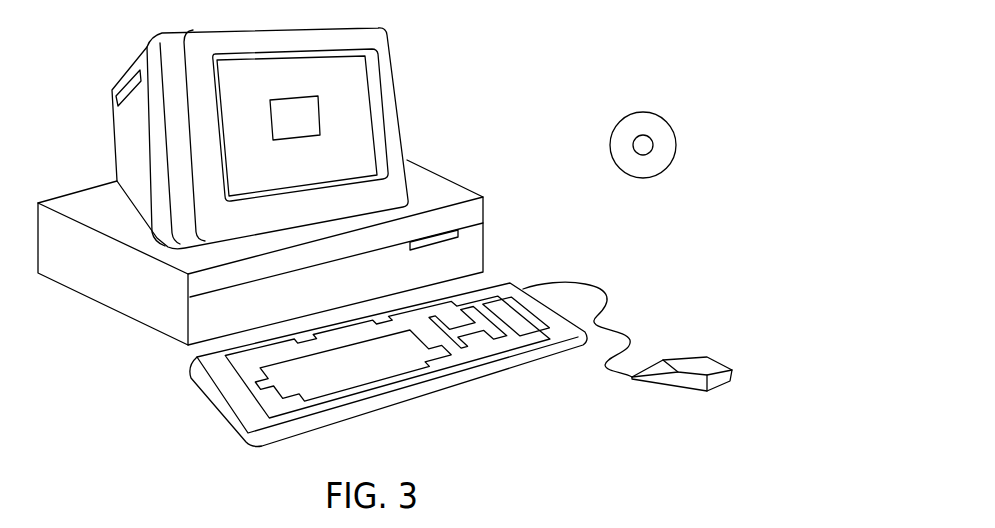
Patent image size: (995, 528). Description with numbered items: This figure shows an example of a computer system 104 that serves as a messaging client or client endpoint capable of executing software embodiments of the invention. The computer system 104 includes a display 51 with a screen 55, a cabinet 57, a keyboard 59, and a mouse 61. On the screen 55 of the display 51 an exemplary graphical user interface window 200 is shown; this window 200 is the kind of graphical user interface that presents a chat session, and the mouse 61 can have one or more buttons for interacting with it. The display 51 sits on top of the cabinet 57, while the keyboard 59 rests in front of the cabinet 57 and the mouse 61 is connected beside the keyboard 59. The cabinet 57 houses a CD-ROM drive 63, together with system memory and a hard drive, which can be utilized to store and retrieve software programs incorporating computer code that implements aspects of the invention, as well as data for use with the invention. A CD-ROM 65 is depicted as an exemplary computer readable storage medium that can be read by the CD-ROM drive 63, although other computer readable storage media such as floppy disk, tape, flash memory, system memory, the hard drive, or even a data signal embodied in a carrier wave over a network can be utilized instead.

The computer system 104 is at (606, 26).
The display 51 is at (402, 120).
The screen 55 is at (348, 80).
The graphical user interface window 200 is at (285, 128).
The cabinet 57 is at (145, 327).
The CD-ROM drive 63 is at (458, 231).
The keyboard 59 is at (415, 398).
The mouse 61 is at (709, 356).
The CD-ROM 65 is at (668, 117).